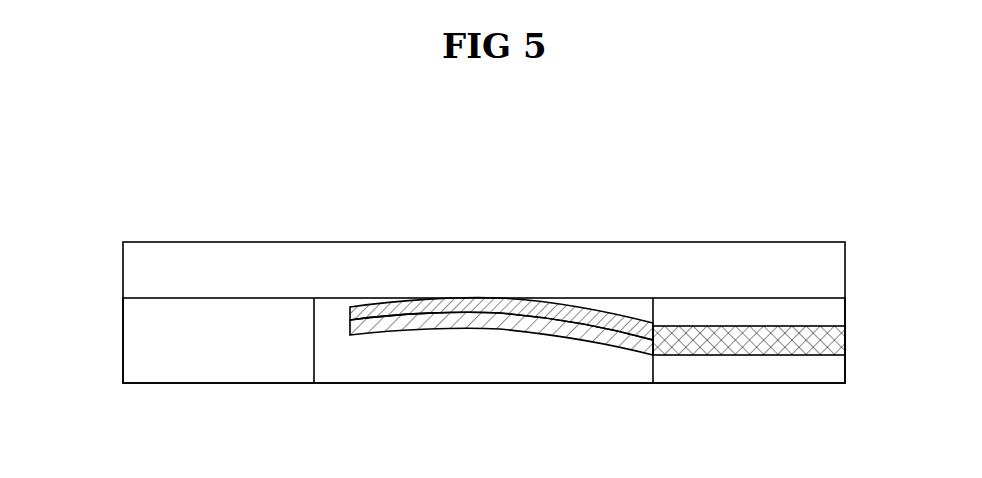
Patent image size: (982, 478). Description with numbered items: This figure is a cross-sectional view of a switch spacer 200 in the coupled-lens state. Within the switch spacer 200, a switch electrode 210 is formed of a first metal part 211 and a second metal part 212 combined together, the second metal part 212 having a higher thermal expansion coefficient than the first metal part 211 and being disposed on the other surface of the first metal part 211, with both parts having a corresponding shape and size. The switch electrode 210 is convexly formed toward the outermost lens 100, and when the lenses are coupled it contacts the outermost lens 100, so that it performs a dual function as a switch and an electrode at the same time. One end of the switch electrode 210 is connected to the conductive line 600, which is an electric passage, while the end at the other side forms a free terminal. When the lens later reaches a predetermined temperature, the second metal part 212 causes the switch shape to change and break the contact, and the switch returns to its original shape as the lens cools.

The outermost lens 100 is at (118, 252).
The switch spacer 200 is at (116, 320).
The switch electrode 210 is at (483, 327).
The first metal part 211 is at (581, 304).
The second metal part 212 is at (573, 338).
The conductive line 600 is at (737, 344).